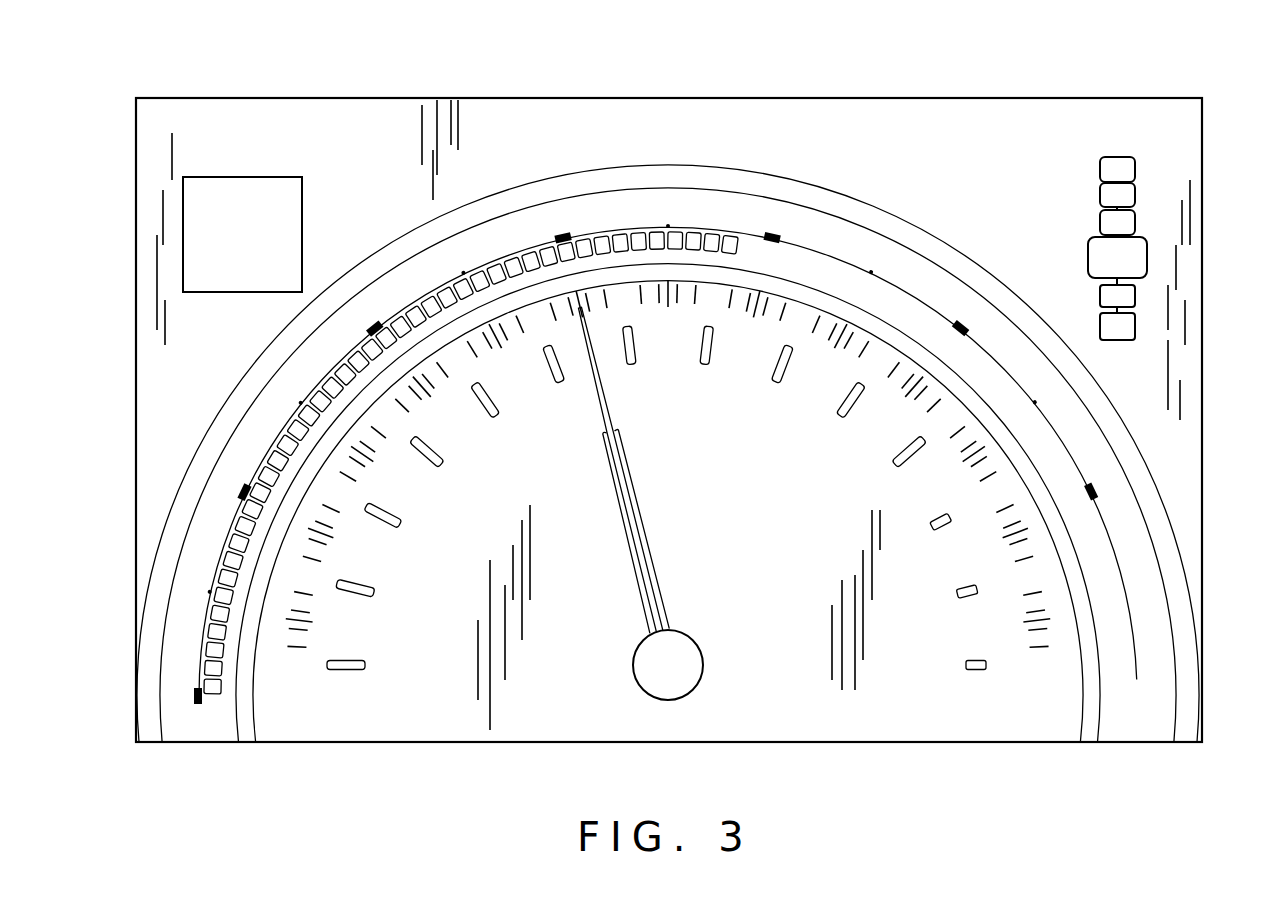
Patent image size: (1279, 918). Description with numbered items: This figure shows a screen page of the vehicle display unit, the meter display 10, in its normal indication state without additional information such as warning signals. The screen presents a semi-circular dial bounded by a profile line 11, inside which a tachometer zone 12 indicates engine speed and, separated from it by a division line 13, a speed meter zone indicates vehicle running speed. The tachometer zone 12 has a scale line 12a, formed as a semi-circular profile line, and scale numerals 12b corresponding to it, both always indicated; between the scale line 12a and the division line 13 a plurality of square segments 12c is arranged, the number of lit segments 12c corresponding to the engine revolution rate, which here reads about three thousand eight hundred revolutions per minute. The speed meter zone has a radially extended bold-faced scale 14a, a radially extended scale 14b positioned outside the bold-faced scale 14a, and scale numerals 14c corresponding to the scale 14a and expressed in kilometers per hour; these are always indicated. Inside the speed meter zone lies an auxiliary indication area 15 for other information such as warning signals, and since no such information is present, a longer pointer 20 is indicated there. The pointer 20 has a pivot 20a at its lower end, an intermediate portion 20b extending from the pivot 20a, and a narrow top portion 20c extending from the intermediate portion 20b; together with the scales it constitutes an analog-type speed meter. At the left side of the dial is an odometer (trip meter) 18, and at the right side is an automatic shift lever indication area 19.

The meter display 10 is at (680, 98).
The profile line 11 is at (398, 250).
The tachometer zone 12 is at (652, 372).
The scale line 12a is at (897, 296).
The scale numerals 12b is at (776, 235).
The segments 12c is at (607, 247).
The division line 13 is at (310, 470).
The bold-faced scale 14a is at (345, 680).
The scale 14b is at (300, 626).
The scale numerals 14c is at (300, 582).
The auxiliary indication area 15 is at (720, 578).
The odometer (trip meter) 18 is at (228, 178).
The automatic shift lever indication area 19 is at (1140, 174).
The pointer 20 is at (626, 503).
The pivot 20a is at (651, 632).
The intermediate portion 20b is at (634, 493).
The narrow top portion 20c is at (593, 380).